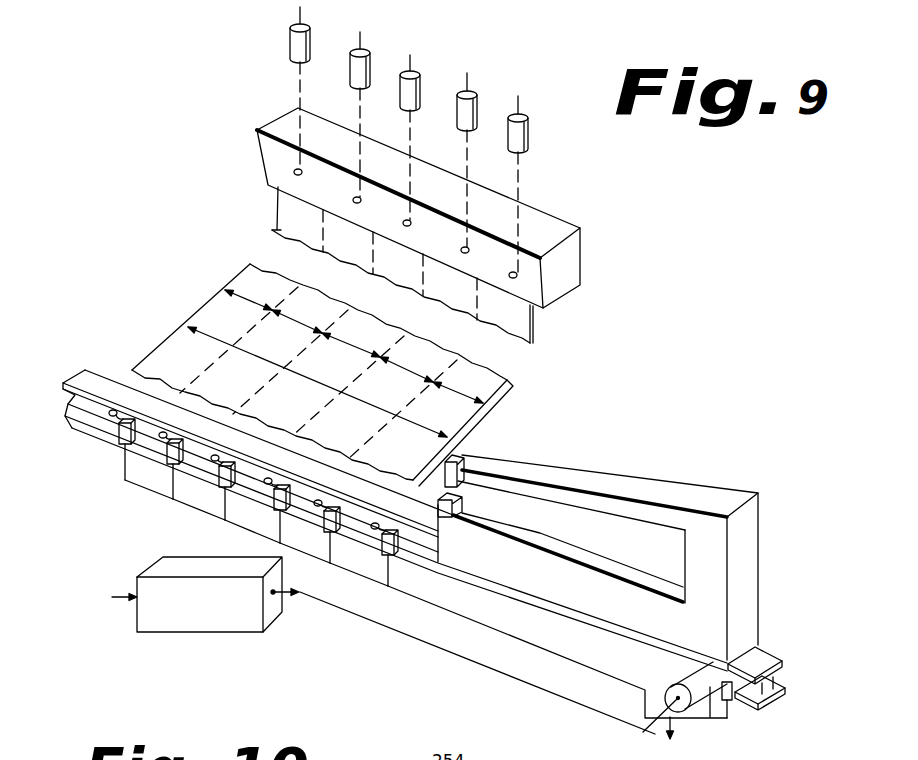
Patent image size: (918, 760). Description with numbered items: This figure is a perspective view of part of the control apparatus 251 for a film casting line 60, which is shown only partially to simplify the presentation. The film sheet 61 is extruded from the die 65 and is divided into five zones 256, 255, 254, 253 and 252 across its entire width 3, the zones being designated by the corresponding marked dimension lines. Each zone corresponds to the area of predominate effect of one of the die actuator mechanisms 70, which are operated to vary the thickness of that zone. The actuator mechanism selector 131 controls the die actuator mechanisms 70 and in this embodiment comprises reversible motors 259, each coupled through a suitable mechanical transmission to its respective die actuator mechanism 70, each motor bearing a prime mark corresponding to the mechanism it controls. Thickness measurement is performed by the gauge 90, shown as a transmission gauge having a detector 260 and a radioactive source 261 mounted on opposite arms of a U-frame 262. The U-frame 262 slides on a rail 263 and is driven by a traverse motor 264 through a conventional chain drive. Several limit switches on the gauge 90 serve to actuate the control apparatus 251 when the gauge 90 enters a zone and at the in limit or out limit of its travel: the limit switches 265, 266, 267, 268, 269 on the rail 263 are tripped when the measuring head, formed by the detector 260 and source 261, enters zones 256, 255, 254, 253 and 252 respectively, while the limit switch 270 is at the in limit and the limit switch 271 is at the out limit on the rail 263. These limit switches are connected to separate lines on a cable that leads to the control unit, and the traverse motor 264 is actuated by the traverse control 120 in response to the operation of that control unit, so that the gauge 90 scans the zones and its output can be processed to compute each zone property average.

The reversible motor 259 is at (531, 88).
The actuator mechanism selector 131 is at (541, 117).
The film casting line 60 is at (620, 214).
The die 65 is at (572, 262).
The die actuator mechanism 70 is at (509, 275).
The entire width 3 is at (330, 389).
The film sheet 61 is at (491, 415).
The zone 252 is at (254, 298).
The zone 253 is at (306, 323).
The zone 254 is at (355, 346).
The zone 255 is at (406, 369).
The zone 256 is at (462, 389).
The control apparatus 251 is at (98, 542).
The limit switch 271 is at (120, 456).
The limit switch 269 is at (149, 471).
The limit switch 268 is at (196, 486).
The limit switch 267 is at (254, 508).
The limit switch 266 is at (308, 532).
The limit switch 265 is at (362, 552).
The traverse control 120 is at (221, 634).
The gauge 90 is at (644, 486).
The detector 260 is at (468, 456).
The radioactive source 261 is at (465, 507).
The U-frame 262 is at (633, 543).
The rail 263 is at (531, 604).
The traverse motor 264 is at (698, 674).
The limit switch 270 is at (733, 702).